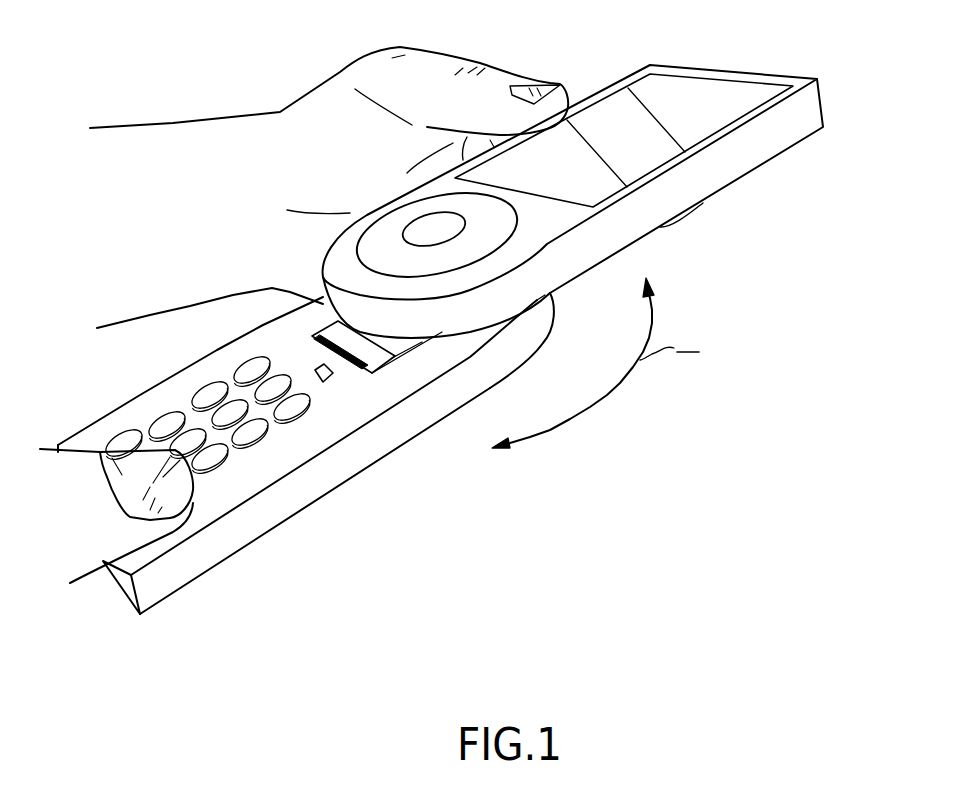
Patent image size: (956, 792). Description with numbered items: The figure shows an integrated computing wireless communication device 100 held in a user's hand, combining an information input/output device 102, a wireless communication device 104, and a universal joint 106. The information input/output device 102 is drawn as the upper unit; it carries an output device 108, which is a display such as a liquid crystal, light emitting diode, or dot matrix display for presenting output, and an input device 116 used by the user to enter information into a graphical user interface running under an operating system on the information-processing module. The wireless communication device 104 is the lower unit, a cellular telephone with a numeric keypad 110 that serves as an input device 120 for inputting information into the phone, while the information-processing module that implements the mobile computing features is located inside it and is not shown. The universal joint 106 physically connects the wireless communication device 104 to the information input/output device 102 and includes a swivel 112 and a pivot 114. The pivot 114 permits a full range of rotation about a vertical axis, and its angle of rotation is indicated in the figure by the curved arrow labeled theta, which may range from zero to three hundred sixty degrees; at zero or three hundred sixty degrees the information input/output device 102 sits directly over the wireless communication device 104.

The integrated computing wireless communication device 100 is at (440, 318).
The information input/output device 102 is at (760, 162).
The wireless communication device 104 is at (380, 458).
The universal joint 106 is at (376, 372).
The output device 108 is at (703, 77).
The numeric keypad 110 is at (253, 452).
The swivel 112 is at (355, 362).
The pivot 114 is at (381, 337).
The input device 116 is at (358, 246).
The input device 120 is at (325, 383).